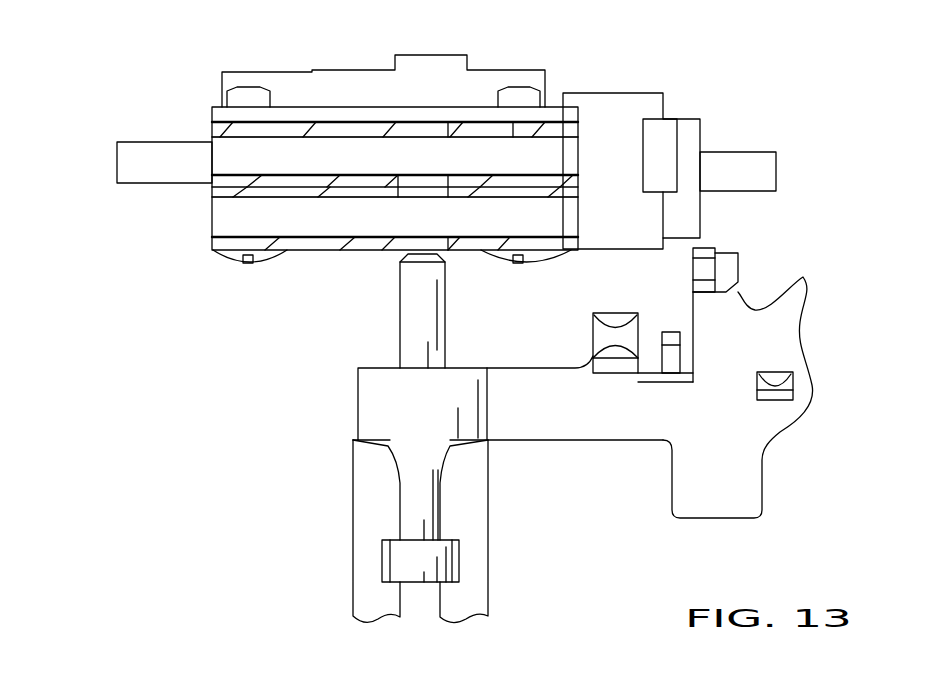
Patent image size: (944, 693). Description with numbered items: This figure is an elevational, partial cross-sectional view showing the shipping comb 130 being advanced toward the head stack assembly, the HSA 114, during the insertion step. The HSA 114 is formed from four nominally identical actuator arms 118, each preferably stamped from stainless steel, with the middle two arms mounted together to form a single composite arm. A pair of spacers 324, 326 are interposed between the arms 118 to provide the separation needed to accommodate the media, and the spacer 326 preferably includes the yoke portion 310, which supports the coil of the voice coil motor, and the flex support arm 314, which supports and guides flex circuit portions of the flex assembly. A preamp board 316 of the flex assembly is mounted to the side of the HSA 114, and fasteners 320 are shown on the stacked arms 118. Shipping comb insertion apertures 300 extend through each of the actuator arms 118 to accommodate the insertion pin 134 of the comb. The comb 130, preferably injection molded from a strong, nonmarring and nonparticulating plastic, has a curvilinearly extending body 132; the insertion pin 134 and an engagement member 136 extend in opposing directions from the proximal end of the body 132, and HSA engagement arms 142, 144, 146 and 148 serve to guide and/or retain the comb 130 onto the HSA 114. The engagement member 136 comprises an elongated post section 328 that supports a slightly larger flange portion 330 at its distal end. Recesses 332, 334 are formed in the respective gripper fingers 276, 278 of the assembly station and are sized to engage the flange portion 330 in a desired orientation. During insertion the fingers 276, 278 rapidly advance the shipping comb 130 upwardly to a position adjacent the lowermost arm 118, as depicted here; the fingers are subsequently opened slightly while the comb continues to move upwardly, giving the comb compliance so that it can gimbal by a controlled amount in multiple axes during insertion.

The HSA 114 is at (498, 26).
The actuator arm 118 is at (290, 130).
The comb 130 is at (346, 402).
The body 132 is at (612, 418).
The insertion pin 134 is at (420, 298).
The engagement member 136 is at (412, 483).
The HSA engagement arm 142 is at (777, 403).
The HSA engagement arm 144 is at (670, 332).
The HSA engagement arm 146 is at (590, 342).
The HSA engagement arm 148 is at (740, 268).
The gripper finger 276 is at (362, 460).
The gripper finger 278 is at (473, 478).
The shipping comb insertion aperture 300 is at (458, 218).
The yoke portion 310 is at (158, 140).
The flex support arm 314 is at (737, 162).
The preamp board 316 is at (608, 113).
The fastener 320 is at (518, 80).
The spacer 324 is at (228, 218).
The spacer 326 is at (222, 157).
The elongated post section 328 is at (425, 497).
The flange portion 330 is at (413, 573).
The recess 332 is at (382, 560).
The recess 334 is at (460, 562).